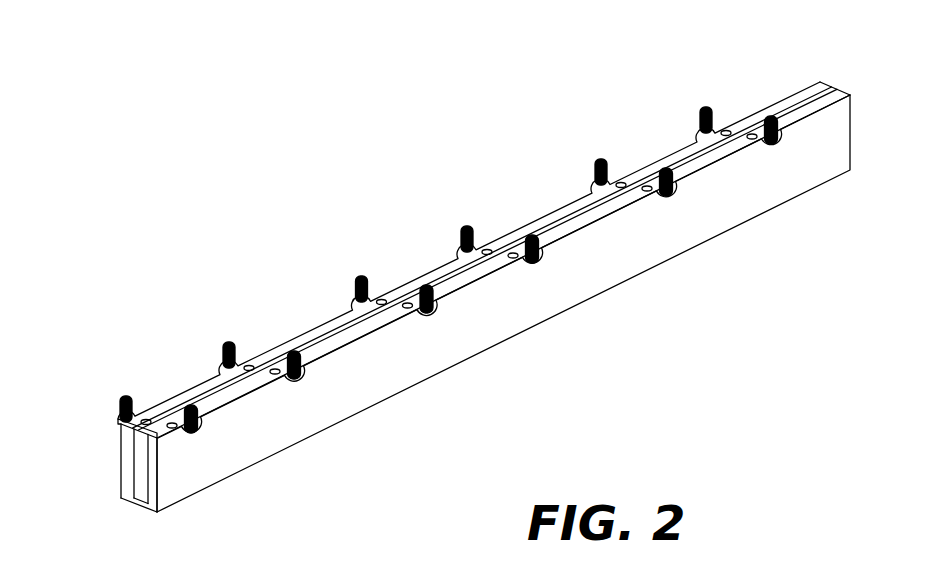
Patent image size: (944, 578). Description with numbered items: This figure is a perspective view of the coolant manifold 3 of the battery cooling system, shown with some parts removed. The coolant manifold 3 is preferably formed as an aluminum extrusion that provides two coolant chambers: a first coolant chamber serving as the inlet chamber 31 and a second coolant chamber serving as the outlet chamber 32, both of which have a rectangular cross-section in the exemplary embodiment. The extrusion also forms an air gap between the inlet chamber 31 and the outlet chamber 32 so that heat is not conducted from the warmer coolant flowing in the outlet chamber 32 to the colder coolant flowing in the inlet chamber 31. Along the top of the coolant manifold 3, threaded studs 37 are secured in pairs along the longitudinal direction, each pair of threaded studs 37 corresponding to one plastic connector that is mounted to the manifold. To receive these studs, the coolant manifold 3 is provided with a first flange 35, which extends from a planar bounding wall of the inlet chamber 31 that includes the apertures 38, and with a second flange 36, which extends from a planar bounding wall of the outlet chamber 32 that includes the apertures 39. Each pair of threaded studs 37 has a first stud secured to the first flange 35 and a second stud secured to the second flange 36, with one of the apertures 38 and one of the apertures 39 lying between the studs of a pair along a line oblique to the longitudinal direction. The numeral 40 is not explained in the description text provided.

The coolant manifold 3 is at (605, 267).
The inlet chamber 31 is at (122, 502).
The outlet chamber 32 is at (130, 467).
The first flange 35 is at (424, 314).
The second flange 36 is at (353, 304).
The threaded stud 37 is at (121, 398).
The aperture 38 is at (172, 422).
The aperture 39 is at (143, 418).
The rib 40 is at (805, 100).